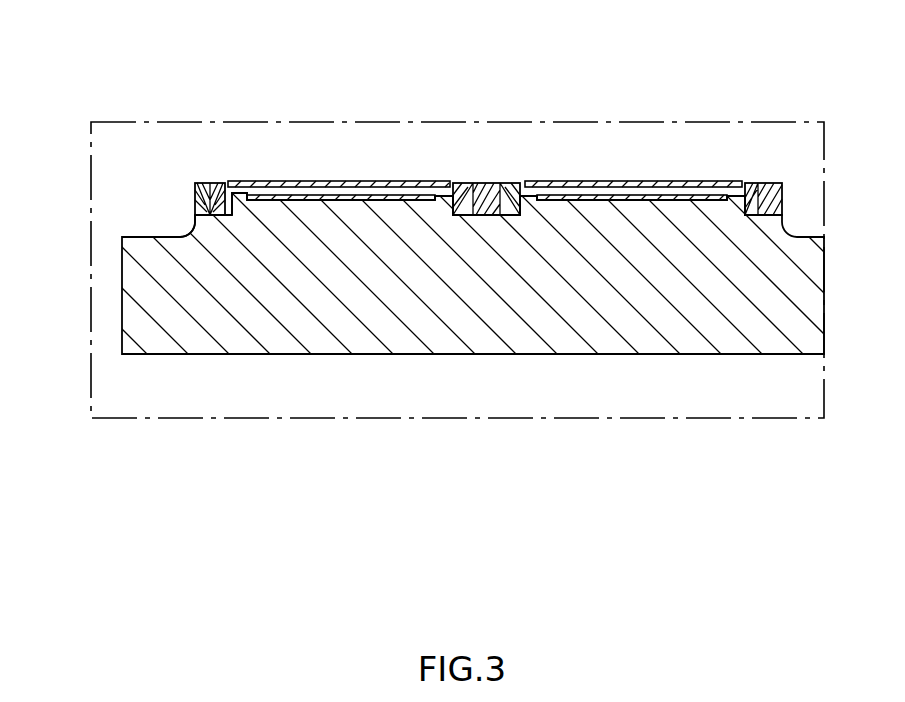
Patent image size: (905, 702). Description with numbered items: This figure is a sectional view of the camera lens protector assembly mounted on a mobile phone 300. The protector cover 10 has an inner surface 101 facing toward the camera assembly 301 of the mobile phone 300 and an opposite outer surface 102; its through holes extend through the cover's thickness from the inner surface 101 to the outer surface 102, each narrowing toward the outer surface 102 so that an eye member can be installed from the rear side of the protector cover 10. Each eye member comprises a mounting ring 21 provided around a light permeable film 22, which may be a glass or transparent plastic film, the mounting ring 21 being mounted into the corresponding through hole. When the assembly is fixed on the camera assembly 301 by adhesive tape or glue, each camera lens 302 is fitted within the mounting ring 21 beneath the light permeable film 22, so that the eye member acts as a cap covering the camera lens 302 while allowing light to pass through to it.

The protector cover 10 is at (197, 197).
The inner surface 101 is at (197, 200).
The outer surface 102 is at (217, 211).
The mounting ring 21 is at (220, 203).
The light permeable film 22 is at (348, 185).
The mobile phone 300 is at (199, 308).
The camera assembly 301 is at (438, 200).
The camera lens 302 is at (375, 199).